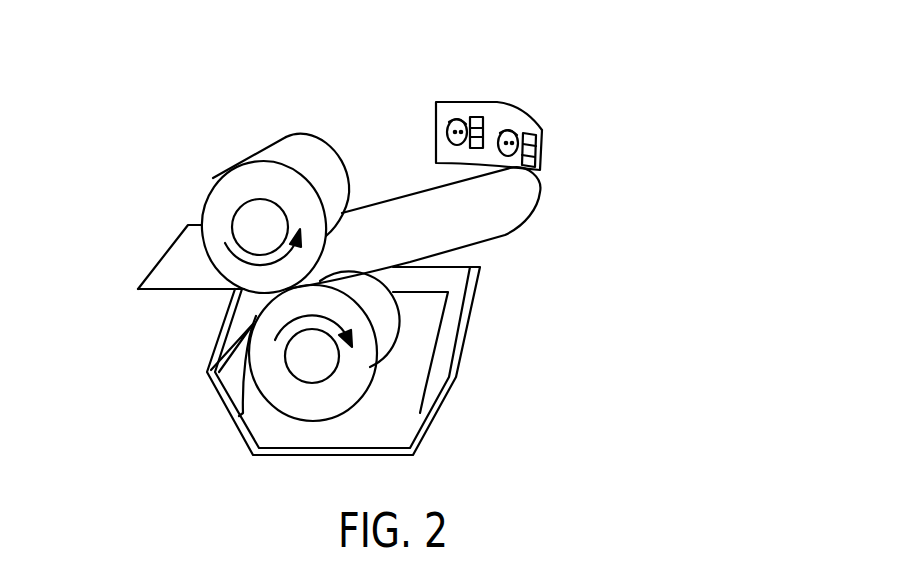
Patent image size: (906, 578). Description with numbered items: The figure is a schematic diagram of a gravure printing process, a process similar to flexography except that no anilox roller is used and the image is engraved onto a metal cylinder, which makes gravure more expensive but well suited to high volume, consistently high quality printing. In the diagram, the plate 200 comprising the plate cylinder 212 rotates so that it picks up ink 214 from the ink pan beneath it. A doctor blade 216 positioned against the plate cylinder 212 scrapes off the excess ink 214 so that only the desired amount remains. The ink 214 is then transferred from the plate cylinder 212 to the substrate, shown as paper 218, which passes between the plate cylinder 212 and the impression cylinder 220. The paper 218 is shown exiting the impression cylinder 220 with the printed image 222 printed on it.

The plate 200 is at (393, 283).
The plate cylinder 212 is at (360, 377).
The ink 214 is at (263, 435).
The doctor blade 216 is at (220, 335).
The substrate (paper) 218 is at (162, 257).
The impression cylinder 220 is at (267, 150).
The printed image 222 is at (497, 100).